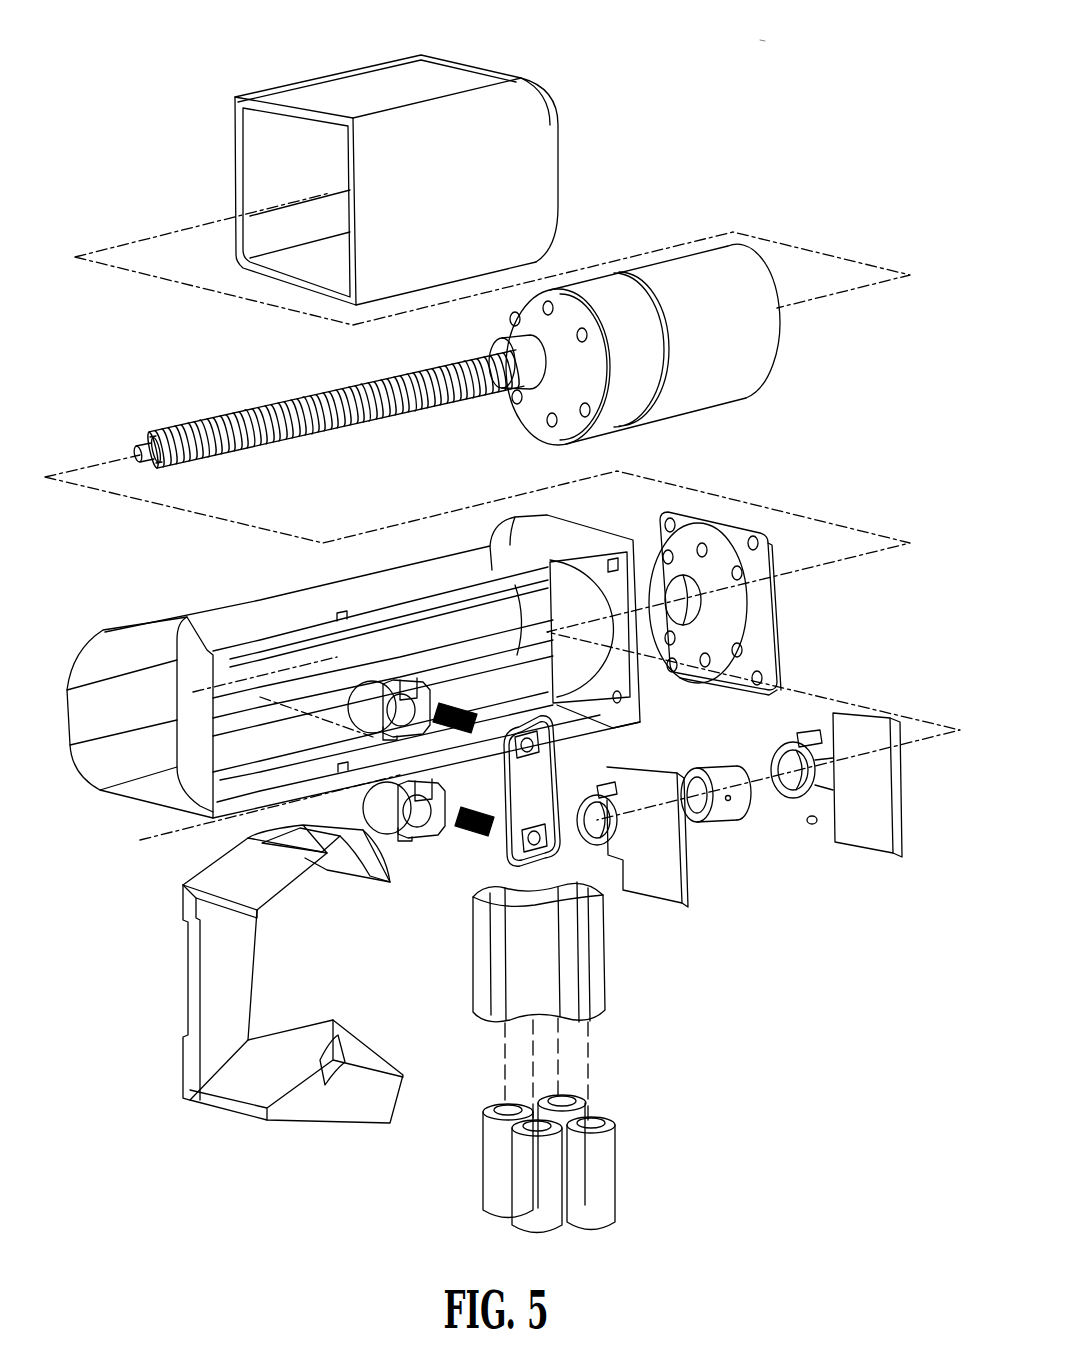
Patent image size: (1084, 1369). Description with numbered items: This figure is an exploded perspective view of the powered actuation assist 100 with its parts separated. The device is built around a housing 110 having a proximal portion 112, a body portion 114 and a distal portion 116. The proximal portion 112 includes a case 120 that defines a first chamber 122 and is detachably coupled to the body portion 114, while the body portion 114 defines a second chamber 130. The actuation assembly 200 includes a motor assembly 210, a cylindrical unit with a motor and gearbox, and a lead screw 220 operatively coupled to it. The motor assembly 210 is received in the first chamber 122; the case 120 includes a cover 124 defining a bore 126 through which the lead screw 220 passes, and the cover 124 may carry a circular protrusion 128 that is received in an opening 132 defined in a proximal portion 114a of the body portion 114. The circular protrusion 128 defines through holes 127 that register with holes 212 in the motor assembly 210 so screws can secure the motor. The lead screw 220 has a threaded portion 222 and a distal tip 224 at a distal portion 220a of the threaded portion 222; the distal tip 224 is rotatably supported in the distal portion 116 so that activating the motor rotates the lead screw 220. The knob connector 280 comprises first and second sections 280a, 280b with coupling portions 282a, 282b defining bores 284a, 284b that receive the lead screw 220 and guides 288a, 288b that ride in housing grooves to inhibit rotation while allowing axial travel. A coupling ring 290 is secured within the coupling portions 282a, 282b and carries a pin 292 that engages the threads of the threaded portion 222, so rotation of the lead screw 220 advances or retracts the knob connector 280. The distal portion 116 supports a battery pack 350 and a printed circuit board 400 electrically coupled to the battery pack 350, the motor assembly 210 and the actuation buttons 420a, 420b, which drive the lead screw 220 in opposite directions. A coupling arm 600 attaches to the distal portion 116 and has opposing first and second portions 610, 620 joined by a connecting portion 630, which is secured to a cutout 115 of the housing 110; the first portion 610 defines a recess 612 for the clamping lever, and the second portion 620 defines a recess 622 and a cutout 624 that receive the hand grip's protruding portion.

The powered actuation assist 100 is at (785, 52).
The housing 110 is at (90, 655).
The proximal portion 112 is at (525, 100).
The body portion 114 is at (432, 580).
The proximal portion of the body portion 114a is at (547, 532).
The cutout 115 is at (318, 622).
The distal portion 116 is at (148, 630).
The case 120 is at (385, 78).
The first chamber 122 is at (262, 145).
The cover 124 is at (757, 533).
The bore 126 is at (697, 600).
The through holes 127 is at (745, 652).
The circular protrusion 128 is at (737, 585).
The second chamber 130 is at (185, 790).
The opening 132 is at (588, 600).
The actuation assembly 200 is at (99, 411).
The motor assembly 210 is at (673, 270).
The holes 212 is at (550, 307).
The lead screw 220 is at (385, 420).
The distal portion of the threaded portion 220a is at (147, 468).
The threaded portion 222 is at (420, 390).
The distal tip 224 is at (142, 440).
The knob connector 280 is at (776, 856).
The first section 280a is at (680, 898).
The second section 280b is at (893, 855).
The coupling portion 282a is at (598, 803).
The coupling portion 282b is at (793, 760).
The bore 284a is at (612, 838).
The bore 284b is at (830, 760).
The guide 288a is at (608, 778).
The guide 288b is at (805, 730).
The coupling ring 290 is at (714, 815).
The pin 292 is at (812, 828).
The battery pack 350 is at (618, 1082).
The printed circuit board 400 is at (560, 858).
The actuation button 420a is at (392, 680).
The actuation button 420b is at (420, 850).
The coupling arm 600 is at (190, 1100).
The first portion 610 is at (342, 1130).
The recess 612 is at (325, 1055).
The second portion 620 is at (292, 905).
The recess 622 is at (322, 848).
The cutout 624 is at (352, 890).
The connecting portion 630 is at (185, 955).